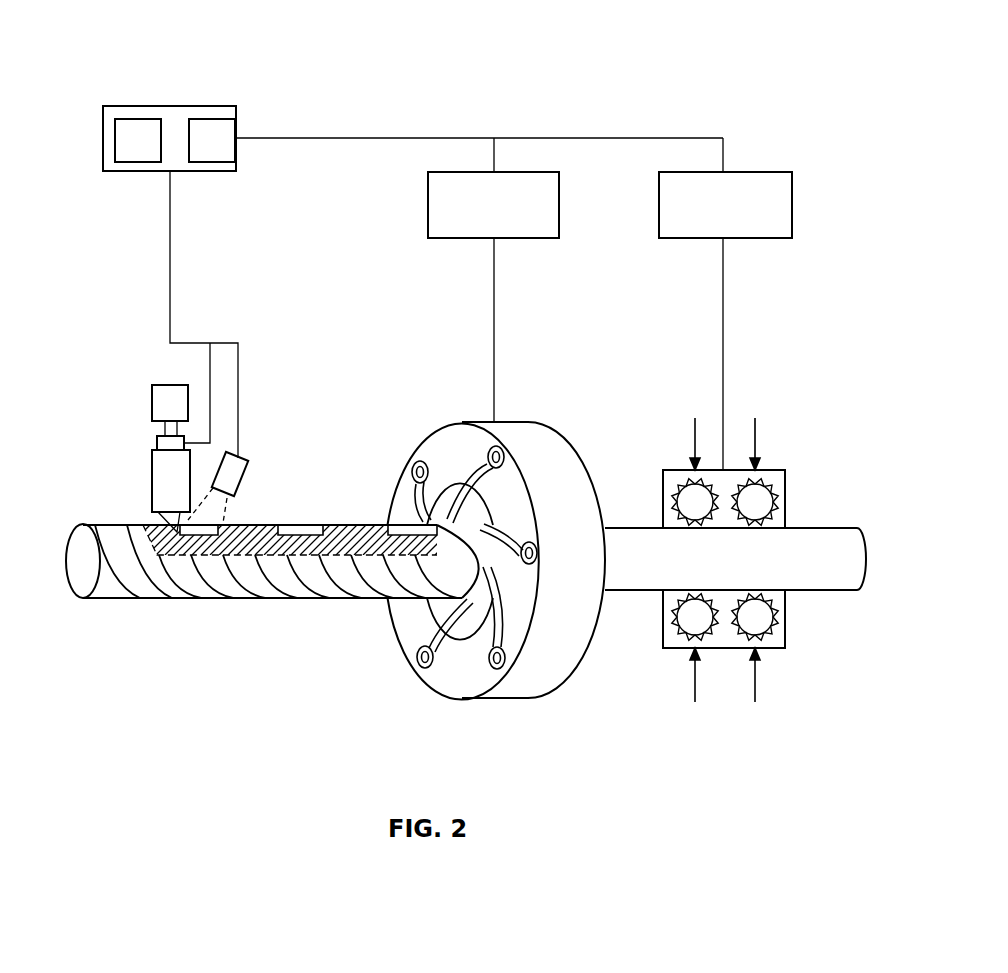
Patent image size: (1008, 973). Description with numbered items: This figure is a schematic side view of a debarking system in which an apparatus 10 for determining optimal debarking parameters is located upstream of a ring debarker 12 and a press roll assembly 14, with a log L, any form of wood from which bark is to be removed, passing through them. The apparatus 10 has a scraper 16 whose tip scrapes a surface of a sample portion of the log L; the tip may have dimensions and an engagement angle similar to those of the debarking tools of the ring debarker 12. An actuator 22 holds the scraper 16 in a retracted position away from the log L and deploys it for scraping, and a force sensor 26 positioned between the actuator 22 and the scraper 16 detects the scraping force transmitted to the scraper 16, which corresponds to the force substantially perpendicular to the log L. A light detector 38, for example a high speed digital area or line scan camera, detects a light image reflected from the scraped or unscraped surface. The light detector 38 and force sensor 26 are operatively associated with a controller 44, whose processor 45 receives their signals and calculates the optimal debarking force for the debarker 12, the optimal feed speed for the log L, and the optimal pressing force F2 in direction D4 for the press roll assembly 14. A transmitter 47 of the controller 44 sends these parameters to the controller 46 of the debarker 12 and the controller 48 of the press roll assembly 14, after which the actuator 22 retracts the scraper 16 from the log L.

The apparatus 10 is at (217, 742).
The ring debarker 12 is at (477, 713).
The press roll assembly 14 is at (725, 648).
The scraper 16 is at (152, 481).
The actuator 22 is at (152, 398).
The force sensor 26 is at (157, 443).
The light detector 38 is at (248, 478).
The controller 44 is at (187, 106).
The processor 45 is at (138, 140).
The controller of debarker 46 is at (480, 216).
The transmitter 47 is at (212, 140).
The controller of press roll assembly 48 is at (709, 216).
The log L is at (282, 600).
The pressing force F2 is at (762, 429).
The direction D4 is at (760, 441).